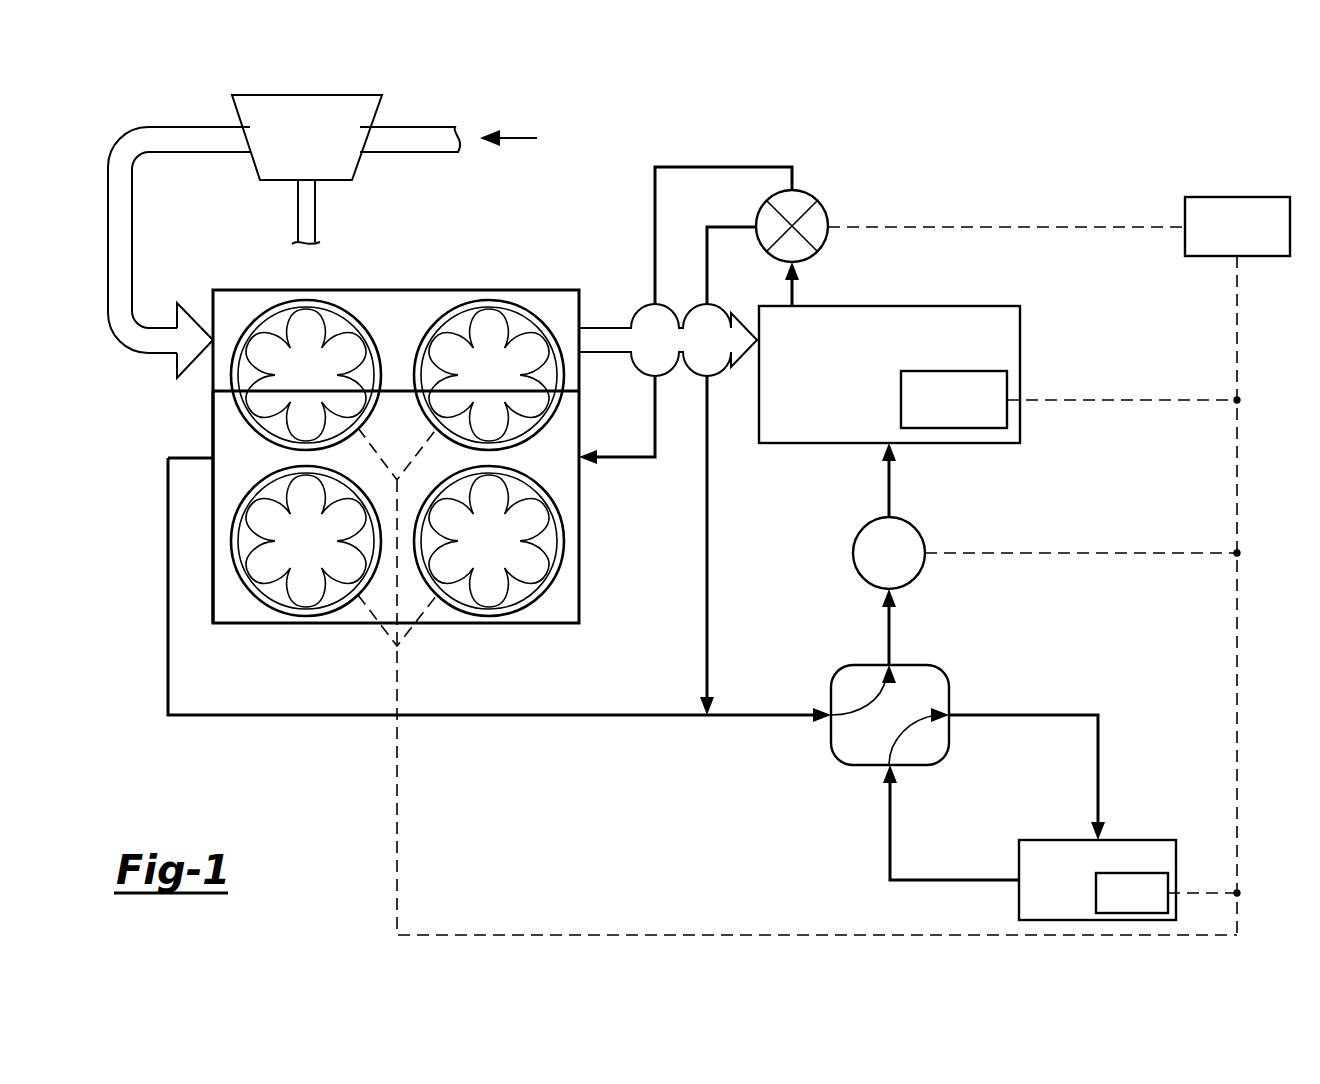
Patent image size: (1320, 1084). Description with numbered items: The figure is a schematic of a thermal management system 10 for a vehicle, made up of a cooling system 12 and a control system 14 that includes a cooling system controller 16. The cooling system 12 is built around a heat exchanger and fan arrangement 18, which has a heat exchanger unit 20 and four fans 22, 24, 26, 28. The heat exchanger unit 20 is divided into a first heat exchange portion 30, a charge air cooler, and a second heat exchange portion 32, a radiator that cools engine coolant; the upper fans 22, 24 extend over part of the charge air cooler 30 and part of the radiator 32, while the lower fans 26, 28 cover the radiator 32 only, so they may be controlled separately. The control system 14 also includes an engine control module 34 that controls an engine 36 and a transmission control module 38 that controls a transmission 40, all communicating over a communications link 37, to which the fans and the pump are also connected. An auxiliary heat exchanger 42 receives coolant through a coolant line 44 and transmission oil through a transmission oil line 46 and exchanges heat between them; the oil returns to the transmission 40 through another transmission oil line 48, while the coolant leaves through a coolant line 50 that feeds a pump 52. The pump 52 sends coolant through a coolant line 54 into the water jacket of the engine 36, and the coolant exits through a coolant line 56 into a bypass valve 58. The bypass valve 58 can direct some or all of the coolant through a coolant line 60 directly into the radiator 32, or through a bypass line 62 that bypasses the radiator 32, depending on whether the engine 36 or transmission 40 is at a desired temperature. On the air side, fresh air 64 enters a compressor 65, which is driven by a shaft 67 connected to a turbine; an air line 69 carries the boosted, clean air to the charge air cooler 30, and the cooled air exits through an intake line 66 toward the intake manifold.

The thermal management system 10 is at (1000, 112).
The cooling system 12 is at (470, 652).
The control system 14 is at (1263, 278).
The cooling system controller 16 is at (1185, 207).
The heat exchanger and fan arrangement 18 is at (325, 650).
The heat exchanger unit 20 is at (170, 446).
The fan 22 is at (283, 300).
The fan 24 is at (514, 300).
The fan 26 is at (258, 607).
The fan 28 is at (565, 547).
The first heat exchange portion 30 is at (213, 389).
The second heat exchange portion 32 is at (213, 416).
The engine control module 34 is at (901, 399).
The engine 36 is at (960, 306).
The communications link 37 is at (1237, 480).
The transmission control module 38 is at (1096, 894).
The transmission 40 is at (1148, 840).
The auxiliary heat exchanger 42 is at (912, 665).
The coolant line 44 is at (578, 717).
The transmission oil line 46 is at (890, 822).
The transmission oil line 48 is at (1040, 715).
The coolant line 50 is at (889, 639).
The pump 52 is at (903, 568).
The coolant line 54 is at (889, 489).
The coolant line 56 is at (797, 295).
The bypass valve 58 is at (804, 193).
The coolant line 60 is at (655, 183).
The bypass line 62 is at (707, 608).
The fresh air 64 is at (517, 138).
The compressor 65 is at (320, 148).
The intake line 66 is at (718, 356).
The shaft 67 is at (315, 212).
The air line 69 is at (202, 127).